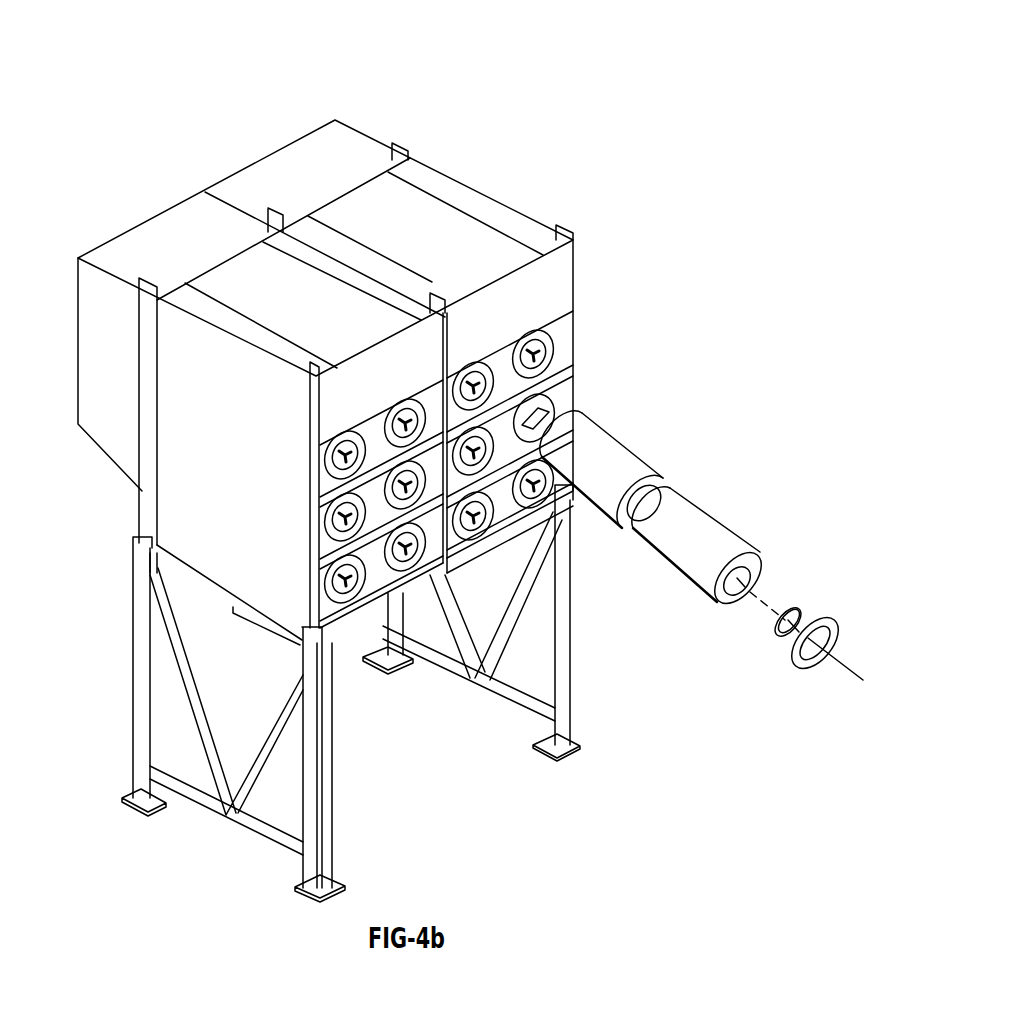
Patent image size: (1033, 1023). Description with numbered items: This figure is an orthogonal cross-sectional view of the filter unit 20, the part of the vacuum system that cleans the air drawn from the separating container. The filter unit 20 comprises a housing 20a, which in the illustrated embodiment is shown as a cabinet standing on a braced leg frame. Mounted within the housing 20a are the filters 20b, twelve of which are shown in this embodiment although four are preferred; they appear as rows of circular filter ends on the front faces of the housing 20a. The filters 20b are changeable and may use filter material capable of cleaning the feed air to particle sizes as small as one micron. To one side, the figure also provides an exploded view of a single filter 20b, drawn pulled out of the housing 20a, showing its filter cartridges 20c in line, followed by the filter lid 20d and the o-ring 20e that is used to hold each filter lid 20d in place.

The filter unit 20 is at (530, 105).
The housing 20a is at (577, 280).
The filters 20b is at (553, 333).
The filter cartridges 20c is at (643, 458).
The filter lid 20d is at (777, 633).
The o-ring 20e is at (797, 667).